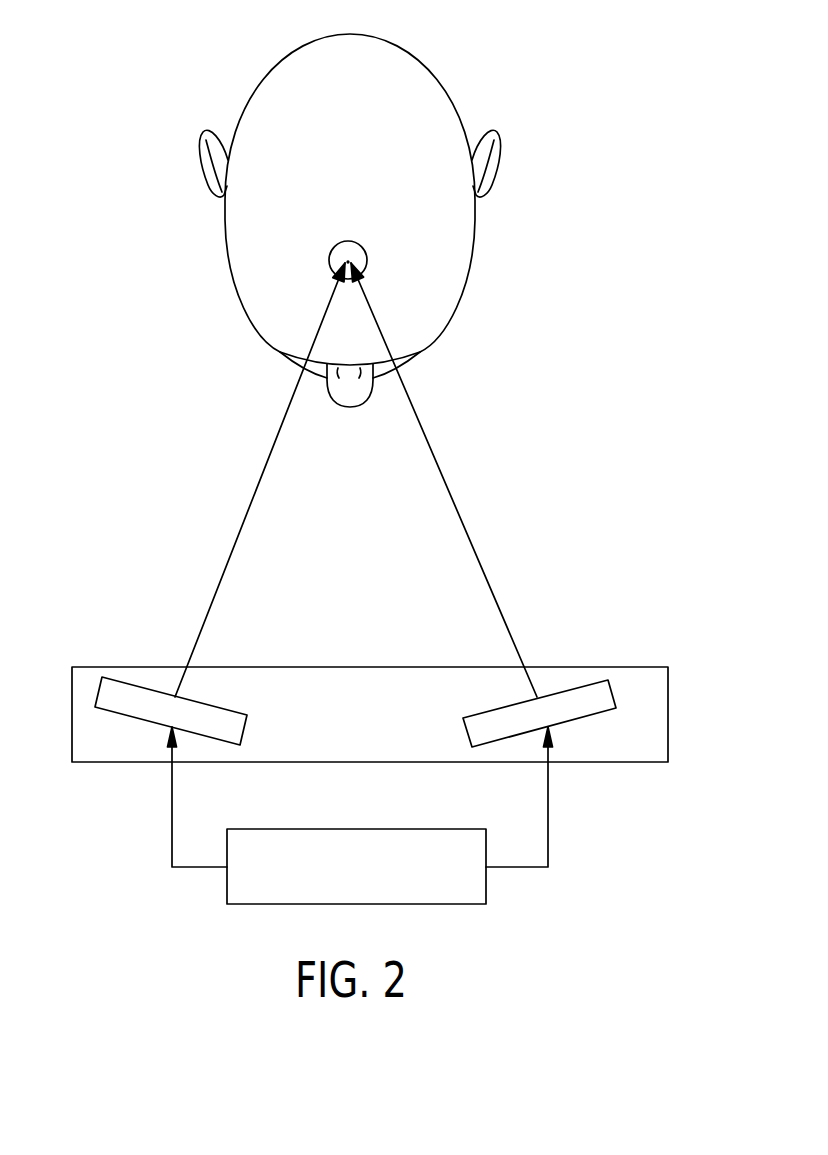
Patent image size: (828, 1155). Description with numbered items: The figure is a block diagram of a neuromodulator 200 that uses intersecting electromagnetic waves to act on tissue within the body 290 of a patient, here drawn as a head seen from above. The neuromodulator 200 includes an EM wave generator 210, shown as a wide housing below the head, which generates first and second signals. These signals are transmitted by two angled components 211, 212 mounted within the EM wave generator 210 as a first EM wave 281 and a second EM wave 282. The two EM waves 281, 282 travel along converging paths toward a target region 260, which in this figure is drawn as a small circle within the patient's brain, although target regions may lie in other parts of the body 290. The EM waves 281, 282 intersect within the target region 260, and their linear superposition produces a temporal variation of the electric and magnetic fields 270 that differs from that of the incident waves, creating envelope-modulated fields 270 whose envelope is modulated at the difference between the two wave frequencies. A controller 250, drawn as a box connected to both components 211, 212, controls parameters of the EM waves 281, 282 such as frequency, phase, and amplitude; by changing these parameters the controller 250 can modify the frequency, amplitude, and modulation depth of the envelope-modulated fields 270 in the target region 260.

The neuromodulator 200 is at (613, 536).
The EM wave generator 210 is at (283, 667).
The component of the EM wave generator 211 is at (130, 684).
The component of the EM wave generator 212 is at (578, 687).
The controller 250 is at (352, 829).
The target region 260 is at (349, 241).
The envelope-modulated electric and magnetic fields 270 is at (348, 261).
The first EM wave 281 is at (232, 551).
The second EM wave 282 is at (414, 410).
The body 290 is at (435, 93).